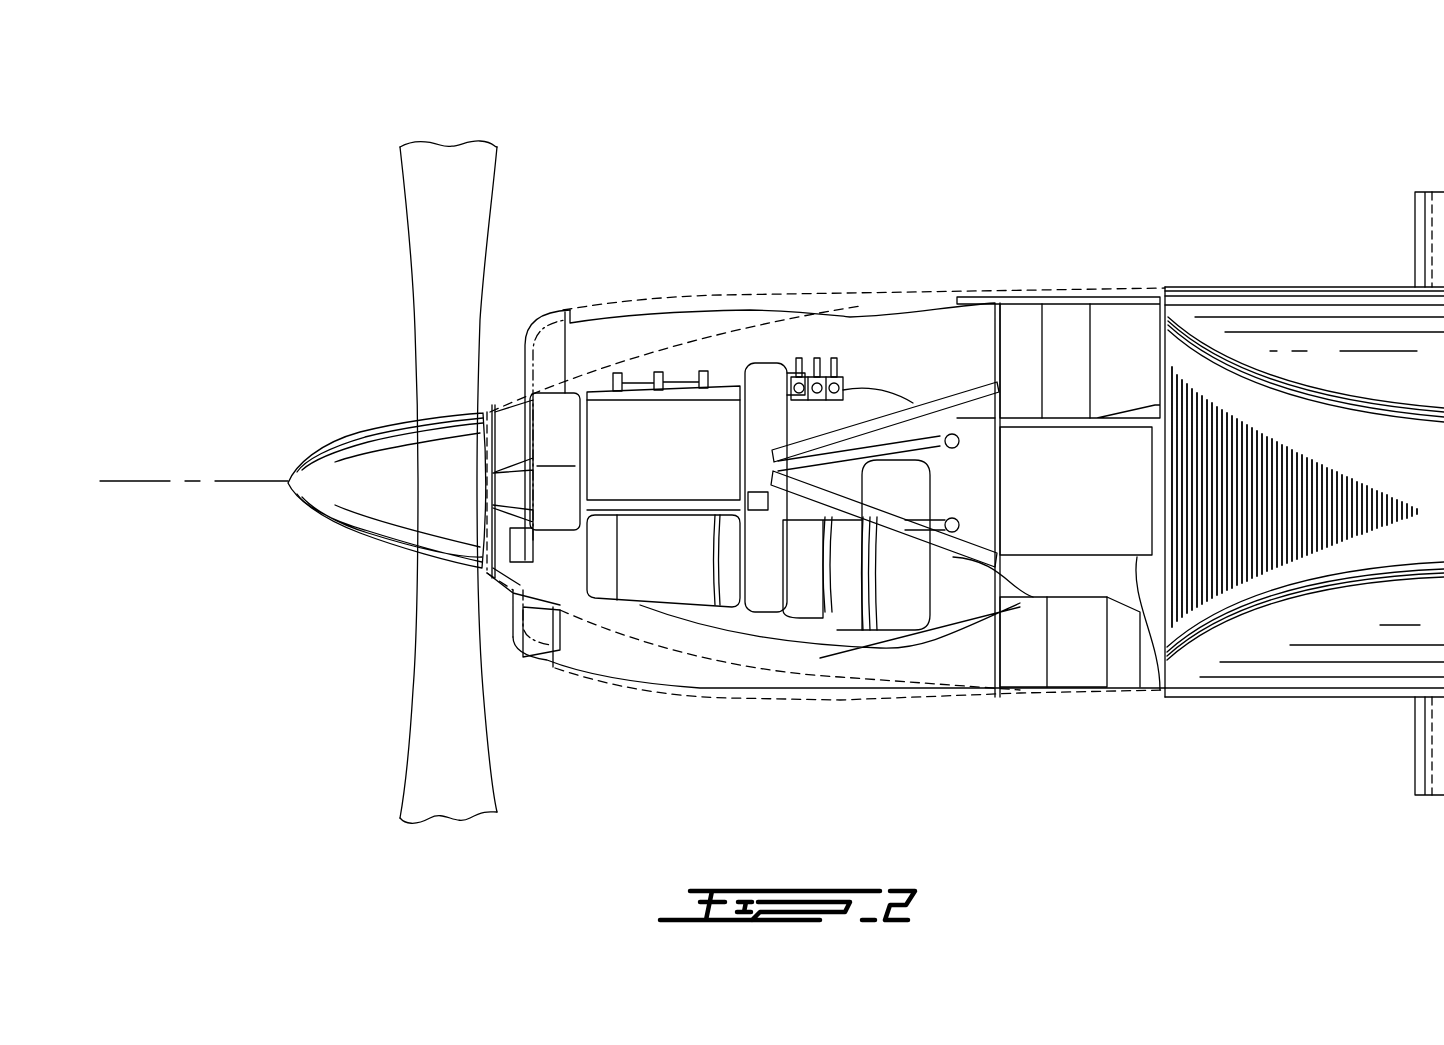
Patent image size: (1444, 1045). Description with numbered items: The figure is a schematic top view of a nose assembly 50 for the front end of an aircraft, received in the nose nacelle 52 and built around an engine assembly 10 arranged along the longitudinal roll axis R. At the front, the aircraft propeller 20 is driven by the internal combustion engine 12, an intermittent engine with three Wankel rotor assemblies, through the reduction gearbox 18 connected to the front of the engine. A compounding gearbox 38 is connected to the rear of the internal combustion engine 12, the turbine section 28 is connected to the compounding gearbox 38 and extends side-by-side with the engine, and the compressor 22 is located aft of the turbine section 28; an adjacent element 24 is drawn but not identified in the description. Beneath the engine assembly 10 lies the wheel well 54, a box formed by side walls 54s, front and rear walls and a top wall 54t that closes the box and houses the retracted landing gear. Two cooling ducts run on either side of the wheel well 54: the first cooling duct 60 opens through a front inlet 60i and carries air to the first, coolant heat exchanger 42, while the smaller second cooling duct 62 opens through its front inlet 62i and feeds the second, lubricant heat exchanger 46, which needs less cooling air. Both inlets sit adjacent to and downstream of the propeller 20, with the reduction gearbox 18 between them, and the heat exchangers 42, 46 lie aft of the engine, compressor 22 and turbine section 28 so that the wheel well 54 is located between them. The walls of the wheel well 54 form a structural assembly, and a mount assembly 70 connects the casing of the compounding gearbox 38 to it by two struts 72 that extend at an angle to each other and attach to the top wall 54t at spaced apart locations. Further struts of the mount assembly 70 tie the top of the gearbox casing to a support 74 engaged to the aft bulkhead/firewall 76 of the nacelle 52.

The engine assembly 10 is at (890, 372).
The internal combustion engine 12 is at (632, 430).
The reduction gearbox 18 is at (558, 430).
The aircraft propeller 20 is at (458, 150).
The compressor 22 is at (848, 615).
The combustor / turbine housing 24 is at (905, 615).
The turbine section 28 is at (667, 580).
The compounding gearbox 38 is at (765, 378).
The first heat exchanger 42 is at (1047, 305).
The second heat exchanger 46 is at (1080, 665).
The nose assembly 50 is at (760, 222).
The nose nacelle 52 is at (865, 300).
The wheel well 54 is at (1127, 425).
The side walls 54s is at (1077, 427).
The top wall 54t is at (1150, 468).
The first cooling duct 60 is at (1012, 302).
The front inlet of first cooling duct 60i is at (527, 332).
The second cooling duct 62 is at (1015, 665).
The front inlet of second cooling duct 62i is at (520, 640).
The mount assembly 70 is at (977, 300).
The struts 72 is at (952, 517).
The support 74 is at (1120, 312).
The aft bulkhead/firewall 76 is at (1167, 567).
The longitudinal axis R is at (125, 478).